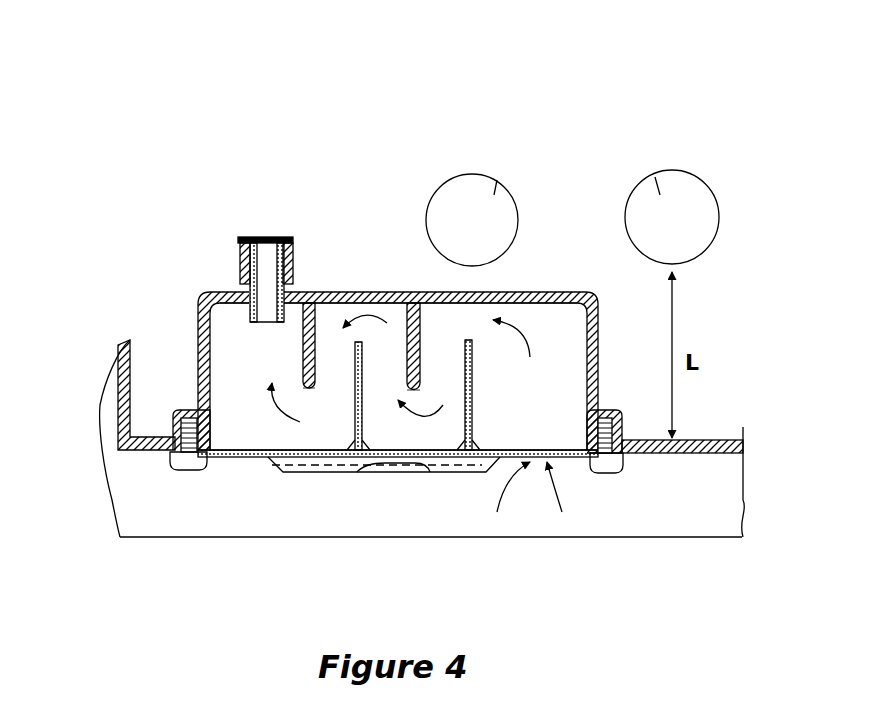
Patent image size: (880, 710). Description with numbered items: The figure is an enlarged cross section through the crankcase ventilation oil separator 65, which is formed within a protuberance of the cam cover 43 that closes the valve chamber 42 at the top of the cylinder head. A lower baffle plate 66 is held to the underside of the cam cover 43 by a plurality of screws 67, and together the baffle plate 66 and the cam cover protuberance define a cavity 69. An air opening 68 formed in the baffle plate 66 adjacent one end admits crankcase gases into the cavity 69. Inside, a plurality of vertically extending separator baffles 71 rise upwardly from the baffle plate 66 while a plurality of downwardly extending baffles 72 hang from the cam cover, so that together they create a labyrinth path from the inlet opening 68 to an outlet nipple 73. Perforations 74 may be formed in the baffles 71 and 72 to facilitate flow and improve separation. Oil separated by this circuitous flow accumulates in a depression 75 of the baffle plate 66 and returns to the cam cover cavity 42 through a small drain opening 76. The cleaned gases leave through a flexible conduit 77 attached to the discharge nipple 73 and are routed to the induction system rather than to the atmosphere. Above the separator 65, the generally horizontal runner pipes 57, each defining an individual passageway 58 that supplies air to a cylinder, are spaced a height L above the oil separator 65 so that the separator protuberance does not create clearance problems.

The valve chamber 42 is at (478, 608).
The cam cover 43 is at (102, 398).
The runner pipe 57 is at (443, 180).
The passageway 58 is at (497, 180).
The crankcase ventilation oil separator 65 is at (213, 292).
The lower baffle plate 66 is at (287, 470).
The screw 67 is at (180, 470).
The air opening 68 is at (550, 450).
The cavity 69 is at (553, 328).
The separator baffle 71 is at (355, 395).
The downwardly extending baffle 72 is at (303, 347).
The outlet nipple 73 is at (280, 288).
The perforation 74 is at (318, 356).
The depression 75 is at (340, 465).
The drain opening 76 is at (383, 477).
The flexible conduit 77 is at (272, 243).